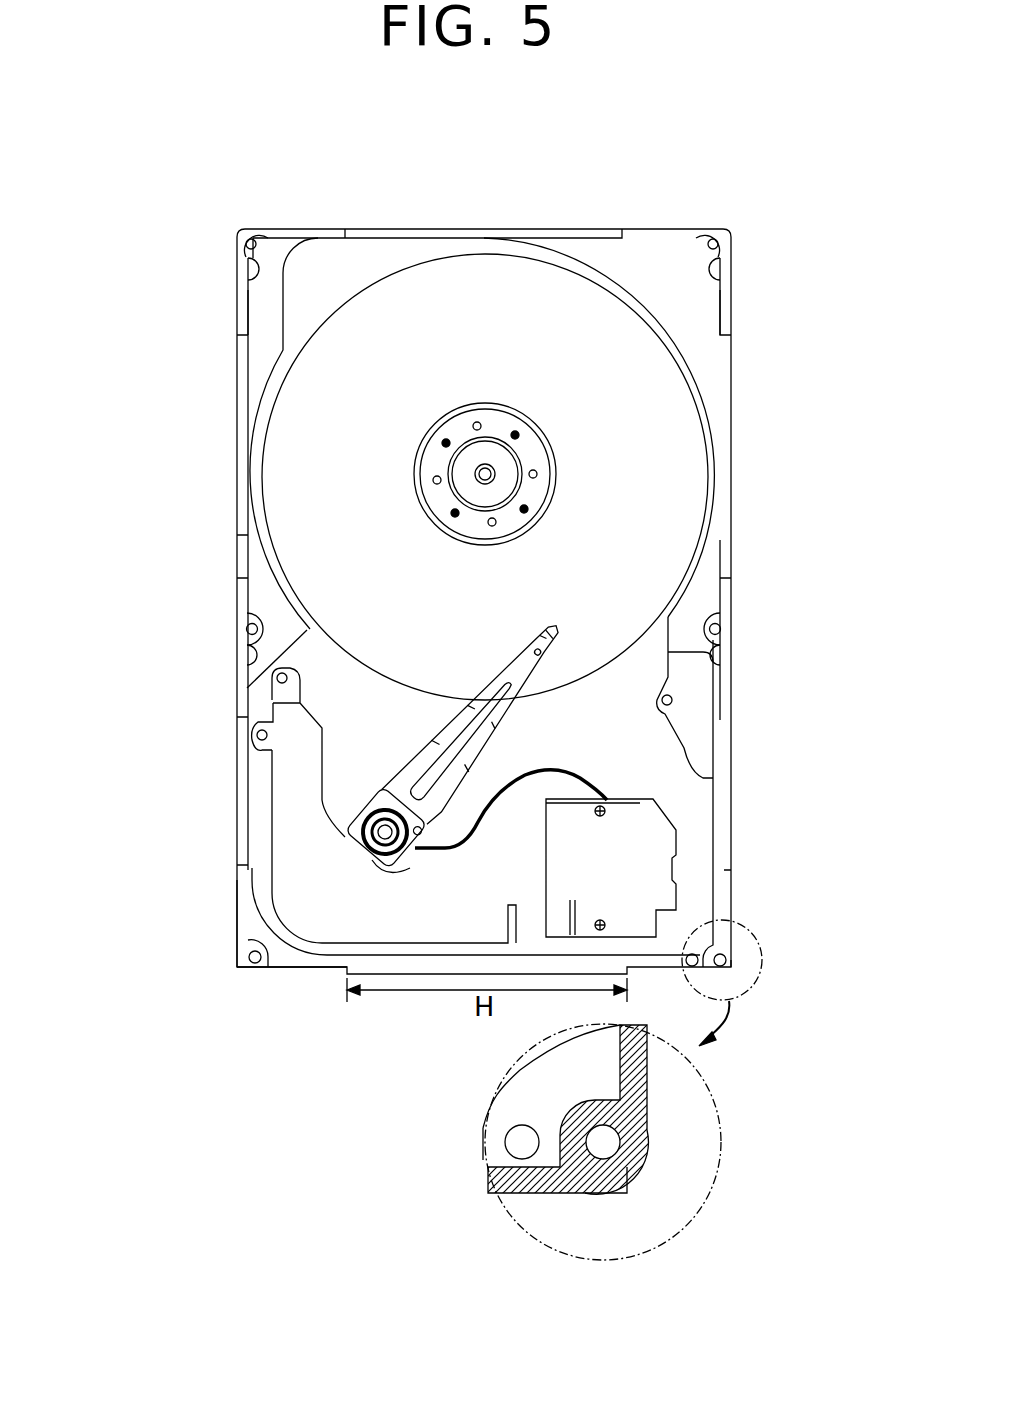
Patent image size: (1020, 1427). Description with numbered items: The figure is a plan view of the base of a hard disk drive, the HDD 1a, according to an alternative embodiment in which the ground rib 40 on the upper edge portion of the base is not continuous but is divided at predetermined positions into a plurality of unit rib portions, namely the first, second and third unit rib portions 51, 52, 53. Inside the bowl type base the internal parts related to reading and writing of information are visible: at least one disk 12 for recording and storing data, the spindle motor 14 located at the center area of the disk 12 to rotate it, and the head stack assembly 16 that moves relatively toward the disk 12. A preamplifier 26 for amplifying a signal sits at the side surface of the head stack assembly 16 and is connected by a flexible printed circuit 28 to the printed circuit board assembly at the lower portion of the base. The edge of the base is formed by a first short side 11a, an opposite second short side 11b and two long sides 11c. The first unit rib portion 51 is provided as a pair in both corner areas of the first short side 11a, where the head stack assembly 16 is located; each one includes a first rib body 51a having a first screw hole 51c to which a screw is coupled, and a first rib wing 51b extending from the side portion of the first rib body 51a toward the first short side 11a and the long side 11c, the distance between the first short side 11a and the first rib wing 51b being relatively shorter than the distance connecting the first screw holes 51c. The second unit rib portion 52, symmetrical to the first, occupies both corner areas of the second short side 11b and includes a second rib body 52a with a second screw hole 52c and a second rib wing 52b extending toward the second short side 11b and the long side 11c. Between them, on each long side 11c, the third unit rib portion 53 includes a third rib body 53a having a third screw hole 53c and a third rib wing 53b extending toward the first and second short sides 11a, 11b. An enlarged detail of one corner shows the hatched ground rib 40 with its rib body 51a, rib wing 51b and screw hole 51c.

The HDD 1a is at (453, 216).
The first short side 11a is at (316, 975).
The second short side 11b is at (371, 232).
The long side 11c is at (243, 505).
The disk 12 is at (498, 340).
The spindle motor 14 is at (418, 492).
The head stack assembly 16 is at (414, 756).
The preamplifier 26 is at (412, 870).
The flexible printed circuit 28 is at (580, 770).
The ground rib 40 is at (489, 1203).
The first unit rib portion 51 is at (134, 890).
The first rib body 51a is at (248, 951).
The first rib wing 51b is at (246, 889).
The first screw hole 51c is at (245, 978).
The second unit rib portion 52 is at (122, 258).
The second rib body 52a is at (250, 276).
The second rib wing 52b is at (246, 334).
The second screw hole 52c is at (250, 243).
The third unit rib portion 53 is at (122, 578).
The third rib body 53a is at (247, 629).
The third rib wing 53b is at (244, 578).
The third screw hole 53c is at (247, 658).